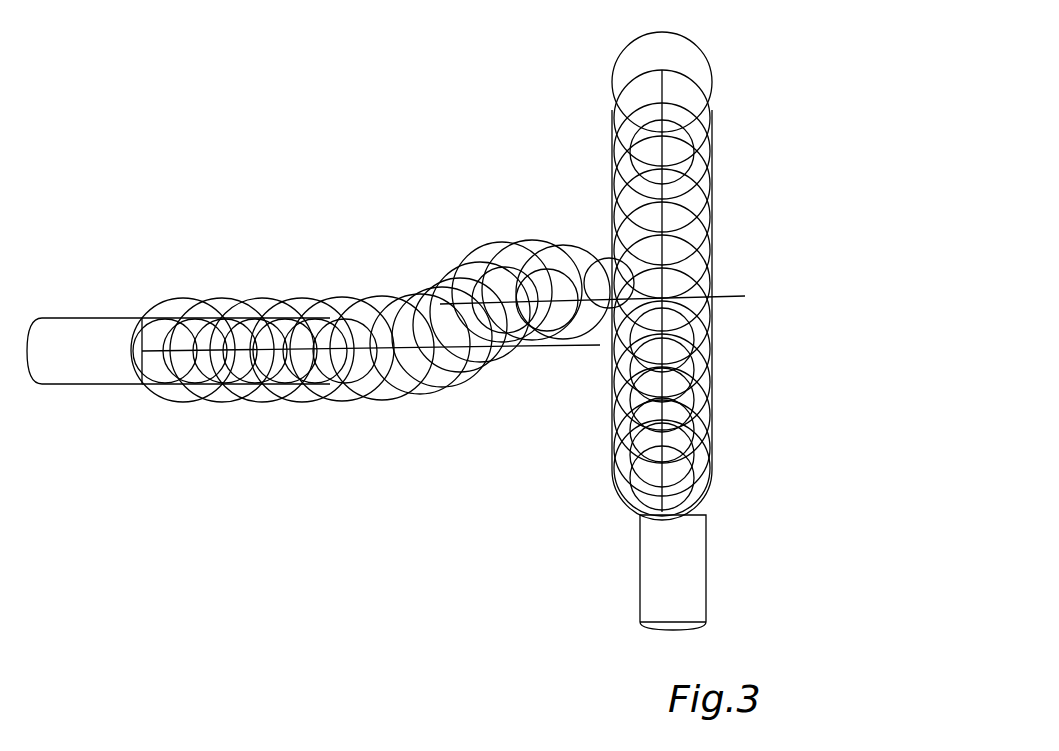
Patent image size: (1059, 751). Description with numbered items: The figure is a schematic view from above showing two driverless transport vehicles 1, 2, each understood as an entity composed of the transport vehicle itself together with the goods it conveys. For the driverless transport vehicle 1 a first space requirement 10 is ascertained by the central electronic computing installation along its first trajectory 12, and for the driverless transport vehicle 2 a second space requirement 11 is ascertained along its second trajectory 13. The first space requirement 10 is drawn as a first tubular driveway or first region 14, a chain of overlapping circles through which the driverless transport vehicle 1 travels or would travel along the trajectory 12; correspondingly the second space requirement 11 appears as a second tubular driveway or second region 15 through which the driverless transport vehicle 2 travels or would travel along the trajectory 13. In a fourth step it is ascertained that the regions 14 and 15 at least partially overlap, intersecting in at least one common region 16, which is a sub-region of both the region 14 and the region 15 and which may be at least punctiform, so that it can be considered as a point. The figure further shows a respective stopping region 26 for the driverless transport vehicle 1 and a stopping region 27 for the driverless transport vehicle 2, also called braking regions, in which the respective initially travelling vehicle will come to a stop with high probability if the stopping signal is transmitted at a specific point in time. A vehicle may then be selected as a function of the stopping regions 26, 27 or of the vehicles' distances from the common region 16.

The driverless transport vehicle 1 is at (75, 365).
The driverless transport vehicle 2 is at (680, 580).
The first space requirement 10 is at (378, 385).
The second space requirement 11 is at (693, 82).
The first trajectory 12 is at (541, 343).
The second trajectory 13 is at (714, 135).
The first region 14 is at (497, 247).
The second region 15 is at (708, 239).
The common region 16 is at (607, 260).
The stopping region 26 is at (262, 337).
The stopping region 27 is at (688, 400).